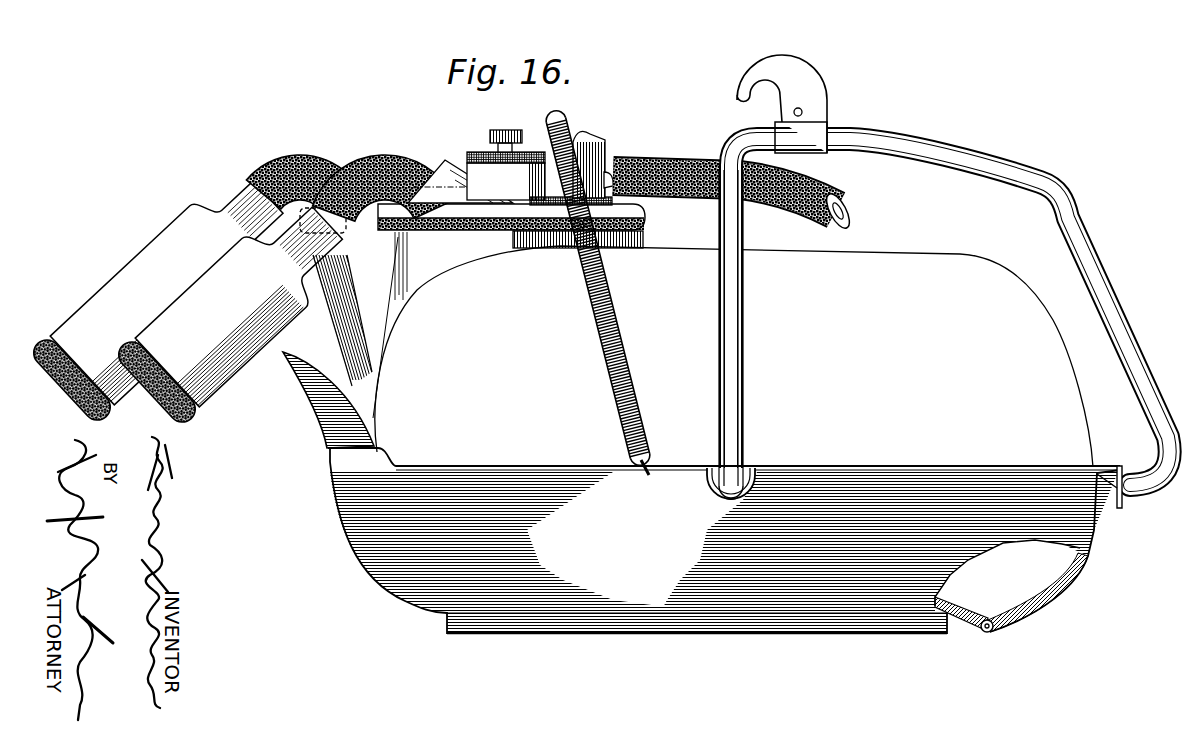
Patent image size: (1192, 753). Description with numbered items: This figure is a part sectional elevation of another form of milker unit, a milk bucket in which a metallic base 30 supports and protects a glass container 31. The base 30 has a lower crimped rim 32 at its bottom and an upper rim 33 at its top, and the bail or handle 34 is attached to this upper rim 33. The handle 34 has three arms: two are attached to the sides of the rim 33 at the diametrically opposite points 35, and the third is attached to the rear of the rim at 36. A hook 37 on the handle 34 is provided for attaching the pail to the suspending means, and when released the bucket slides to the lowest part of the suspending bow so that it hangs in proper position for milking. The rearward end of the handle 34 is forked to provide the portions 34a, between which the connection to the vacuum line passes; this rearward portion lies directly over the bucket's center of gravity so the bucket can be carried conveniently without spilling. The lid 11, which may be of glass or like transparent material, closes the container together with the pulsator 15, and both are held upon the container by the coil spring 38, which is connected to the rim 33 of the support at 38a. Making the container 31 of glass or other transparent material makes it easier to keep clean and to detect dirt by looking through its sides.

The lid 11 is at (643, 215).
The pulsator 15 is at (480, 151).
The metallic base 30 is at (400, 587).
The glass container 31 is at (1083, 421).
The lower crimped rim 32 is at (975, 637).
The upper rim 33 is at (503, 466).
The bail or handle 34 is at (897, 141).
The forked portions of handle 34a is at (740, 282).
The diametrically opposite attachment points 35 is at (743, 470).
The rear attachment point 36 is at (1124, 503).
The hook 37 is at (840, 74).
The coil spring 38 is at (557, 125).
The spring connection point 38a is at (650, 468).